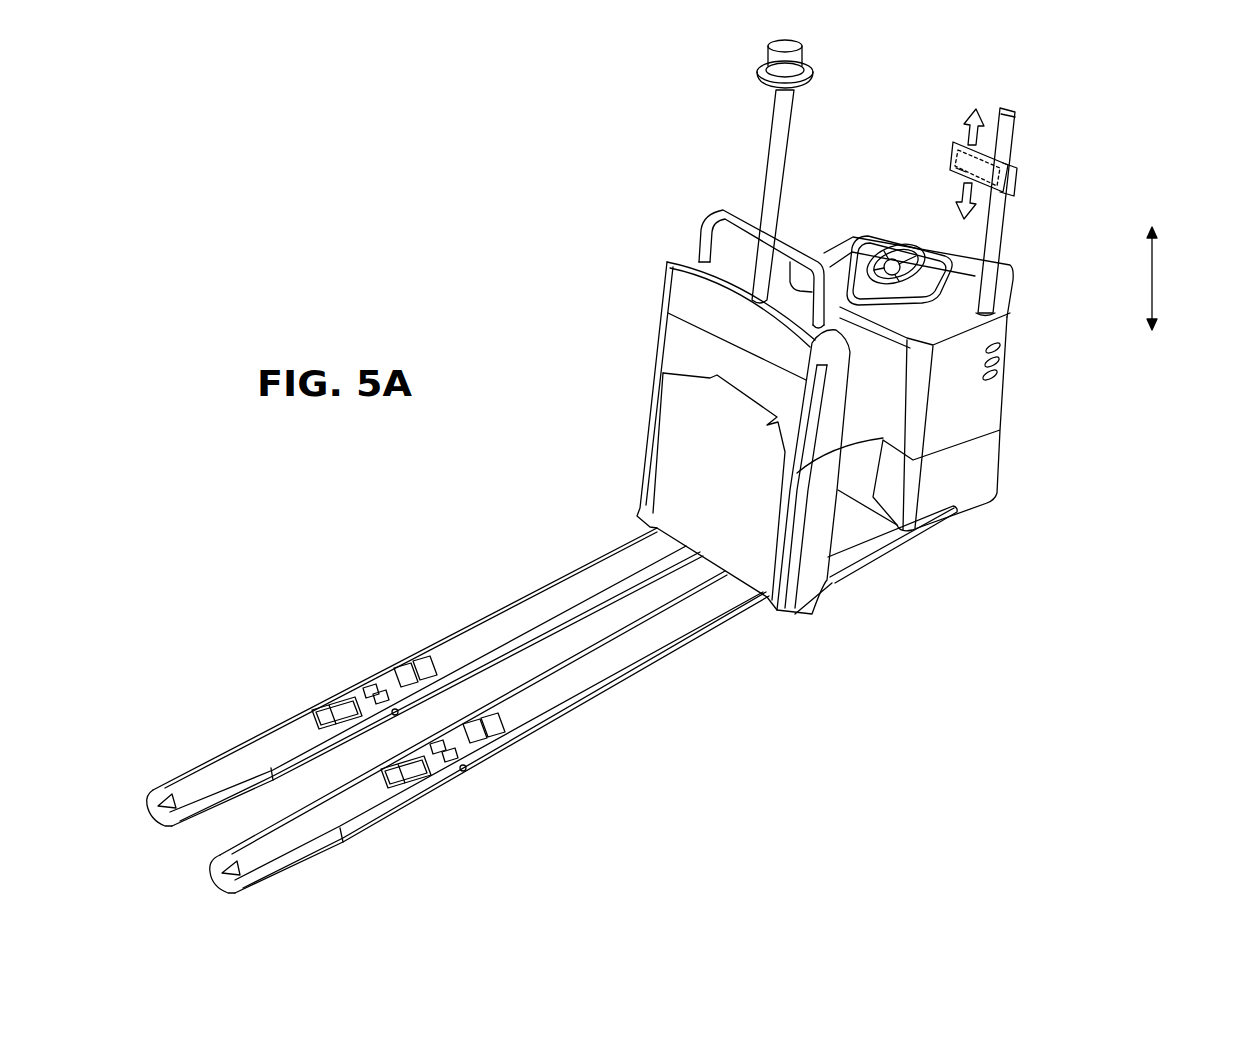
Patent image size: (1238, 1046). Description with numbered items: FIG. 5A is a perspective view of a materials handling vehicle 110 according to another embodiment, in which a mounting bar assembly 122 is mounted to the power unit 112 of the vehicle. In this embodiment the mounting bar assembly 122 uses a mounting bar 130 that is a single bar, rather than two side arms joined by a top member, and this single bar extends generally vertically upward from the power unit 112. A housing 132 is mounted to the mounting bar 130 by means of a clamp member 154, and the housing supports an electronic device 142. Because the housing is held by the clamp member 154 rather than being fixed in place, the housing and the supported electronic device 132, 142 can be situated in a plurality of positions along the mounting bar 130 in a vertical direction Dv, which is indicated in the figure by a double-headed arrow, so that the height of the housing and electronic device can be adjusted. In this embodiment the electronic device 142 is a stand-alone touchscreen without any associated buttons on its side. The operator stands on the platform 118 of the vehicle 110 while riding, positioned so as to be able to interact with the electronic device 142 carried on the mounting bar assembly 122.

The vehicle 110 is at (621, 466).
The power unit 112 is at (1030, 378).
The platform 118 is at (871, 547).
The mounting bar assembly 122 is at (1033, 166).
The mounting bar 130 is at (992, 260).
The housing 132 is at (952, 147).
The electronic device 142 is at (955, 173).
The clamp member 154 is at (1016, 190).
The vertical direction DV is at (1155, 277).